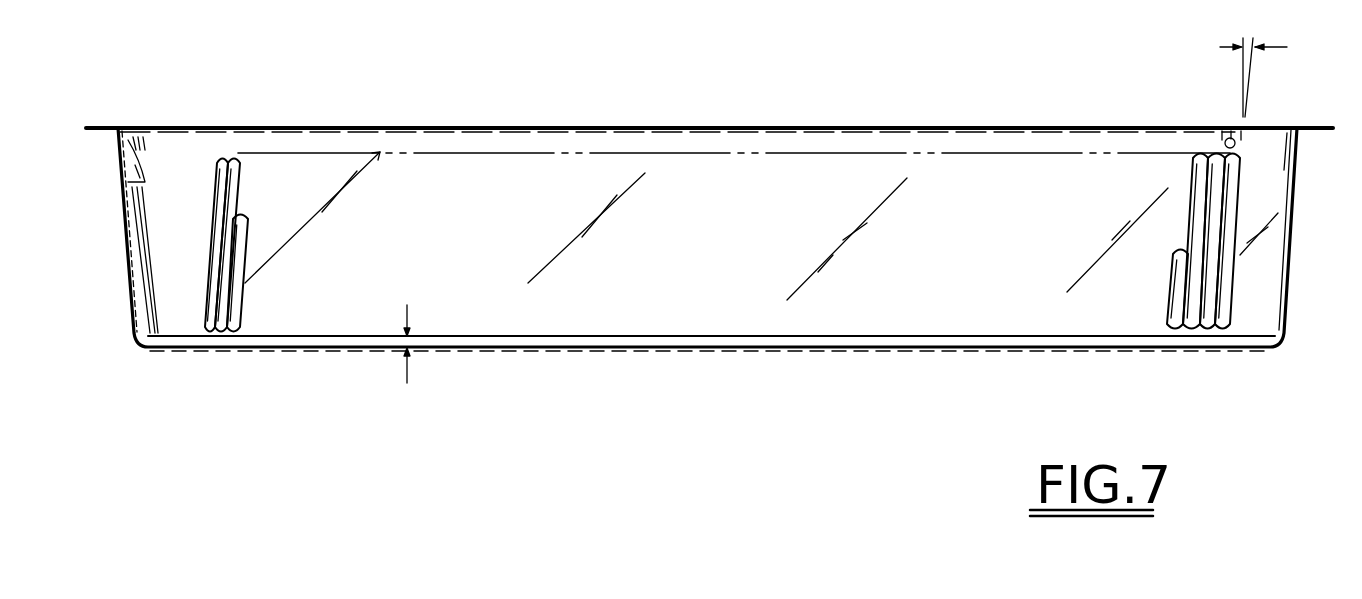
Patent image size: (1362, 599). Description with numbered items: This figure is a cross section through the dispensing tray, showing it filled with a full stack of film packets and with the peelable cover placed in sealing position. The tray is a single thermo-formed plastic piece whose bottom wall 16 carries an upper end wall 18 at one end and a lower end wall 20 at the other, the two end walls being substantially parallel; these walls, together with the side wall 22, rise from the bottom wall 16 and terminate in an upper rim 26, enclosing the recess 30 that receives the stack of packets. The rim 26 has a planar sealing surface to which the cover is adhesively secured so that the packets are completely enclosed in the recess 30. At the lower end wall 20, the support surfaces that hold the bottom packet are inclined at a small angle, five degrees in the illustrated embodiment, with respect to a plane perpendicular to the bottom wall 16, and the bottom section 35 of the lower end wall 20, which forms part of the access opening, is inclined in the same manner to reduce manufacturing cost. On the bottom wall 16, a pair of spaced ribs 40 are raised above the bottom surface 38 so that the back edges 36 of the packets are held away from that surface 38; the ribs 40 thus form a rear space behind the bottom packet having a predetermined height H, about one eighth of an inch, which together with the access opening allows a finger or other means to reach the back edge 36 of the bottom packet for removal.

The bottom wall 16 is at (350, 349).
The upper end wall 18 is at (124, 238).
The lower end wall 20 is at (1298, 196).
The side wall 22 is at (980, 253).
The upper rim 26 is at (252, 128).
The recess 30 is at (690, 177).
The bottom section 35 is at (1280, 278).
The back edge 36 is at (1182, 338).
The surface 38 is at (483, 347).
The rib 40 is at (287, 334).
The height H is at (408, 343).